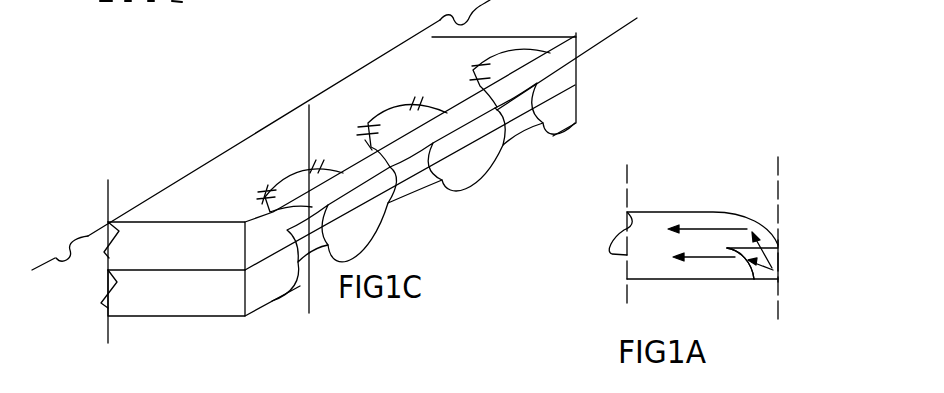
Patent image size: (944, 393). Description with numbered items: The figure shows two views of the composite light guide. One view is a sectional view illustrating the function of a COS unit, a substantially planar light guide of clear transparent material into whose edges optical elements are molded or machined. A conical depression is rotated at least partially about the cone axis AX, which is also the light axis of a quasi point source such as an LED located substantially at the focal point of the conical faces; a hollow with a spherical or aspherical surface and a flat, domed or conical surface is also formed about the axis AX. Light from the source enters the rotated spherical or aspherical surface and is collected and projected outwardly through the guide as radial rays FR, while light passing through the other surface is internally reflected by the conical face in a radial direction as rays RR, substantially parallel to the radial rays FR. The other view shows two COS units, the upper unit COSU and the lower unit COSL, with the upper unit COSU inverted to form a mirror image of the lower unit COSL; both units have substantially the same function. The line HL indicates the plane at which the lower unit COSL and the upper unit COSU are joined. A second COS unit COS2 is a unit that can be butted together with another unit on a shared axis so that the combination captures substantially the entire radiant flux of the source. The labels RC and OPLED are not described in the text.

In FIG. 1C, the upper COS unit COSU is at (168, 227).
In FIG. 1C, the lower COS unit COSL is at (167, 284).
In FIG. 1C, the cone axis AX is at (310, 90).
In FIG. 1C, the joining plane line HL is at (585, 55).
In FIG. 1C, the second COS unit COS2 is at (603, 113).
In FIG. 1A, the reflected rays RR is at (697, 228).
In FIG. 1A, the radial rays FR is at (695, 260).
In FIG. 1A, the reflective cavity RC is at (757, 281).
In FIG. 1A, the organic light emitting diode panel OPLED is at (778, 279).